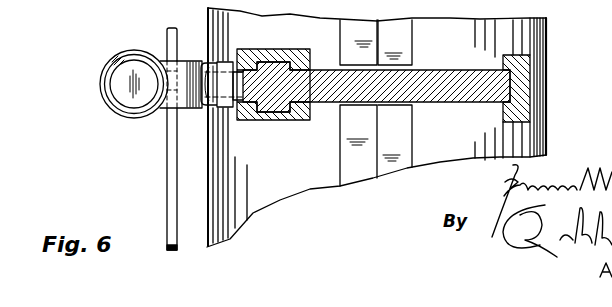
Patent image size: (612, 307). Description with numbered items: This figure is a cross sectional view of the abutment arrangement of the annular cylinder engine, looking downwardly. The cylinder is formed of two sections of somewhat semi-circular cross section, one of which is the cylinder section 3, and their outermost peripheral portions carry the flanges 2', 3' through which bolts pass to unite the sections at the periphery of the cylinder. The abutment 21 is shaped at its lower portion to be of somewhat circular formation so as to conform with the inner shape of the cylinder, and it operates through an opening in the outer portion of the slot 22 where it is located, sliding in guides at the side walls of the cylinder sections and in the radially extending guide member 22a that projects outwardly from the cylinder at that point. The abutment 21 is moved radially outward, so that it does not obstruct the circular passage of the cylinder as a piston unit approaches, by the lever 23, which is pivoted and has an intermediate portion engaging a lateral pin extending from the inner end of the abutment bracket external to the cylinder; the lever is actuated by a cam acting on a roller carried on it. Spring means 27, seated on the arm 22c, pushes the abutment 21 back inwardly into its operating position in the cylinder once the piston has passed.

The cylinder section 3 is at (376, 123).
The flange 2' is at (358, 93).
The flange 3' is at (395, 83).
The abutment 21 is at (452, 78).
The slot 22 is at (411, 100).
The guide member 22a is at (258, 121).
The arm 22c is at (134, 77).
The spring means 27 is at (114, 113).
The lever 23 is at (167, 170).